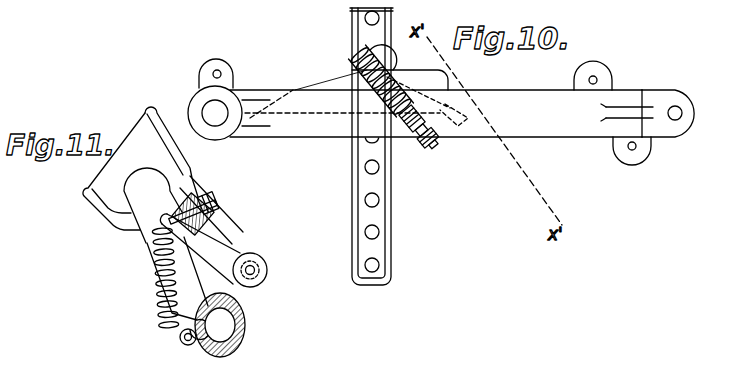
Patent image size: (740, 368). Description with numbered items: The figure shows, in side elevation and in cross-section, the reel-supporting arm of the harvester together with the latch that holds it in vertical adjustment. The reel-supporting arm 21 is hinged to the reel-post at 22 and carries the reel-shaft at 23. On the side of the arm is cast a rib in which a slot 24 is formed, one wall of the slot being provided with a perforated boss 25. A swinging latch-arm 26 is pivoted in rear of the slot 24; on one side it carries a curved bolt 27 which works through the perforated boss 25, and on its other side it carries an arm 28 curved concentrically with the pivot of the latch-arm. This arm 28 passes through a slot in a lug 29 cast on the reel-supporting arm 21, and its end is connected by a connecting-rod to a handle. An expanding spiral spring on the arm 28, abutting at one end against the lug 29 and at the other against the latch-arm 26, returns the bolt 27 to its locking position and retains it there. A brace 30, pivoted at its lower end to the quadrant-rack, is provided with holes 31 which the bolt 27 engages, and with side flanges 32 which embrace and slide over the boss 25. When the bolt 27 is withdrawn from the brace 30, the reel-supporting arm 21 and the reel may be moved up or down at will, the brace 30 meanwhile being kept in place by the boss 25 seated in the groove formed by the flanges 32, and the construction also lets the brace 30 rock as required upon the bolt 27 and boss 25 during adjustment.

In FIG. 10, the reel-supporting arm 21 is at (441, 103).
In FIG. 11, the reel-supporting arm 21 is at (196, 297).
In FIG. 10, the hinge of reel-supporting arm 22 is at (638, 113).
In FIG. 10, the reel-shaft bearing 23 is at (229, 99).
In FIG. 11, the reel-shaft bearing 23 is at (78, 201).
In FIG. 11, the slot 24 is at (222, 234).
In FIG. 11, the perforated boss 25 is at (175, 214).
In FIG. 11, the swinging latch-arm 26 is at (213, 250).
In FIG. 10, the curved bolt 27 is at (350, 9).
In FIG. 11, the curved bolt 27 is at (212, 204).
In FIG. 10, the arm 28 is at (440, 142).
In FIG. 11, the arm 28 is at (160, 310).
In FIG. 10, the lug 29 is at (402, 142).
In FIG. 11, the lug 29 is at (180, 340).
In FIG. 10, the brace 30 is at (388, 243).
In FIG. 11, the brace 30 is at (181, 183).
In FIG. 10, the holes 31 is at (360, 167).
In FIG. 11, the side flanges 32 is at (216, 218).